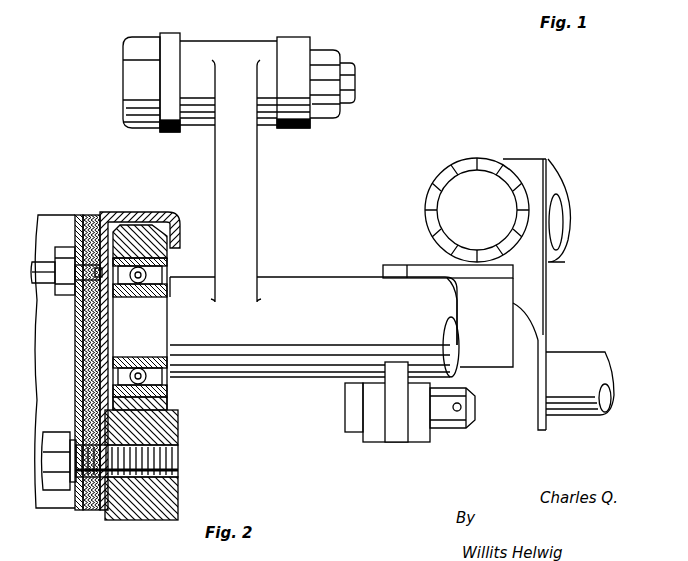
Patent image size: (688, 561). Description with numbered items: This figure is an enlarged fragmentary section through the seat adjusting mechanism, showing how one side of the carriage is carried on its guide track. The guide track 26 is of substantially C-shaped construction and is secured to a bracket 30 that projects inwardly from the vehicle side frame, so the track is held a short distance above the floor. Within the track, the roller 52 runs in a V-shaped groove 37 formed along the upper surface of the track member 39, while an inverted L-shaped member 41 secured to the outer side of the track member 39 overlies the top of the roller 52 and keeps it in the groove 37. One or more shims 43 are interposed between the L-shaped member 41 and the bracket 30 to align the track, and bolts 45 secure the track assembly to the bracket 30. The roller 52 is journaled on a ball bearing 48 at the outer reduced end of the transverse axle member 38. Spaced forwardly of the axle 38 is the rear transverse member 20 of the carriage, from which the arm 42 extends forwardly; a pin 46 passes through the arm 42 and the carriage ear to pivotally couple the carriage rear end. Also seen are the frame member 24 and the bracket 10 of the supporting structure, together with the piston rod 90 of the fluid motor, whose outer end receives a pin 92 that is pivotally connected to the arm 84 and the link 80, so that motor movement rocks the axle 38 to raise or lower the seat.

The frame bracket with tube 10 is at (568, 257).
The rear transverse member 20 is at (500, 340).
The member 24 is at (392, 265).
The guide track 26 is at (109, 210).
The bracket 30 is at (55, 500).
The V-shaped groove 37 is at (176, 417).
The transverse axle member 38 is at (314, 292).
The track member 39 is at (168, 440).
The inverted L-shaped member 41 is at (118, 215).
The arm 42 is at (398, 420).
The shim 43 is at (89, 213).
The bolt 45 is at (49, 285).
The pin 46 is at (476, 400).
The ball bearing 48 is at (165, 271).
The roller 52 is at (143, 232).
The link 80 is at (167, 40).
The arm 84 is at (259, 187).
The piston rod 90 is at (301, 128).
The pin 92 is at (356, 81).